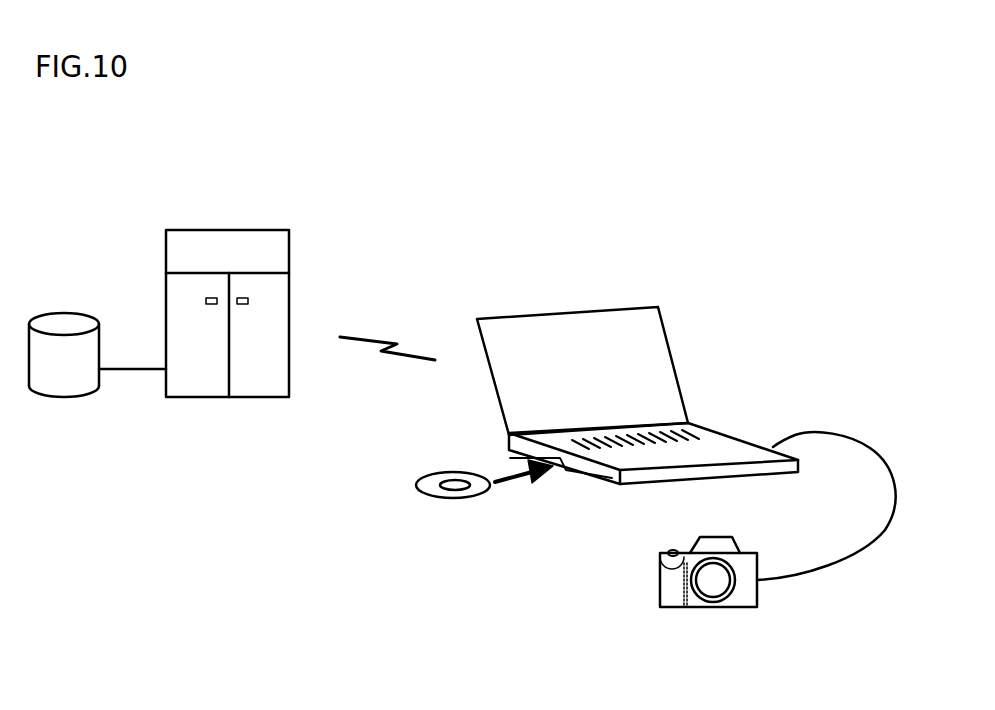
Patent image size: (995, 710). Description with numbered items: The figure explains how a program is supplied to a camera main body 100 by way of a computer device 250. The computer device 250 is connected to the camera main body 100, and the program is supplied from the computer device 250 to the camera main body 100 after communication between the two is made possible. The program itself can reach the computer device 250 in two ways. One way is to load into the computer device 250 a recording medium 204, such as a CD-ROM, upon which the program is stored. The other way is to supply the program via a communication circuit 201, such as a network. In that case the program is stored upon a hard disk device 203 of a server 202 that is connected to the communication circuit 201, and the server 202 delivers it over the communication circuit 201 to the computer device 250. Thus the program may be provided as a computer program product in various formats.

The camera main body 100 is at (671, 608).
The communication circuit 201 is at (390, 334).
The server 202 is at (256, 229).
The hard disk device 203 is at (57, 312).
The recording medium 204 is at (441, 500).
The computer device 250 is at (638, 308).